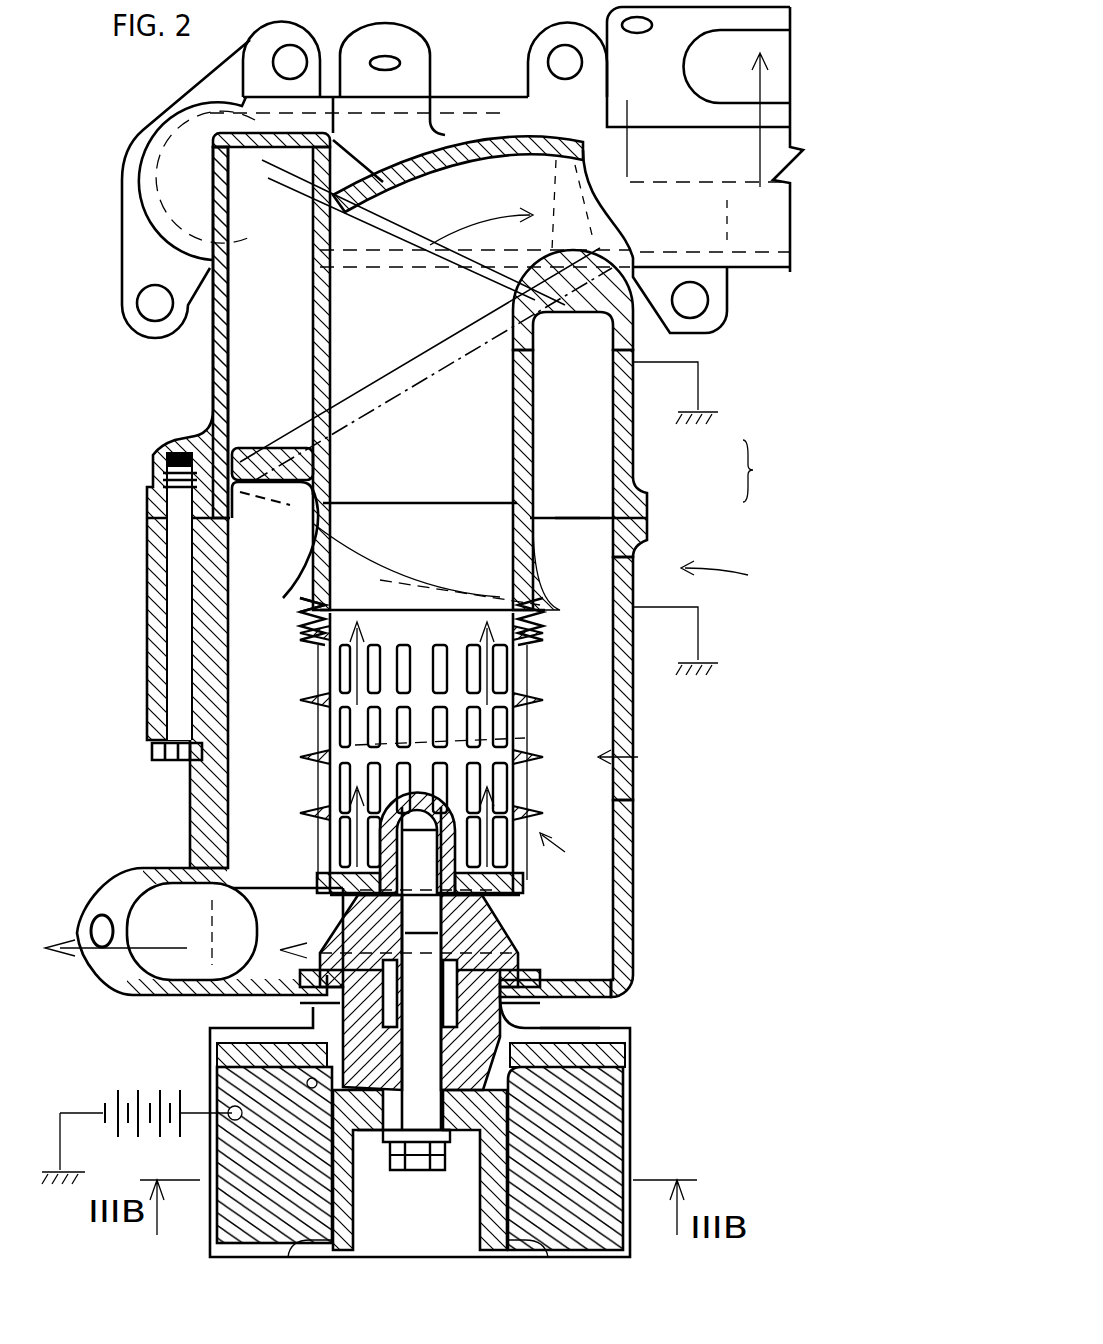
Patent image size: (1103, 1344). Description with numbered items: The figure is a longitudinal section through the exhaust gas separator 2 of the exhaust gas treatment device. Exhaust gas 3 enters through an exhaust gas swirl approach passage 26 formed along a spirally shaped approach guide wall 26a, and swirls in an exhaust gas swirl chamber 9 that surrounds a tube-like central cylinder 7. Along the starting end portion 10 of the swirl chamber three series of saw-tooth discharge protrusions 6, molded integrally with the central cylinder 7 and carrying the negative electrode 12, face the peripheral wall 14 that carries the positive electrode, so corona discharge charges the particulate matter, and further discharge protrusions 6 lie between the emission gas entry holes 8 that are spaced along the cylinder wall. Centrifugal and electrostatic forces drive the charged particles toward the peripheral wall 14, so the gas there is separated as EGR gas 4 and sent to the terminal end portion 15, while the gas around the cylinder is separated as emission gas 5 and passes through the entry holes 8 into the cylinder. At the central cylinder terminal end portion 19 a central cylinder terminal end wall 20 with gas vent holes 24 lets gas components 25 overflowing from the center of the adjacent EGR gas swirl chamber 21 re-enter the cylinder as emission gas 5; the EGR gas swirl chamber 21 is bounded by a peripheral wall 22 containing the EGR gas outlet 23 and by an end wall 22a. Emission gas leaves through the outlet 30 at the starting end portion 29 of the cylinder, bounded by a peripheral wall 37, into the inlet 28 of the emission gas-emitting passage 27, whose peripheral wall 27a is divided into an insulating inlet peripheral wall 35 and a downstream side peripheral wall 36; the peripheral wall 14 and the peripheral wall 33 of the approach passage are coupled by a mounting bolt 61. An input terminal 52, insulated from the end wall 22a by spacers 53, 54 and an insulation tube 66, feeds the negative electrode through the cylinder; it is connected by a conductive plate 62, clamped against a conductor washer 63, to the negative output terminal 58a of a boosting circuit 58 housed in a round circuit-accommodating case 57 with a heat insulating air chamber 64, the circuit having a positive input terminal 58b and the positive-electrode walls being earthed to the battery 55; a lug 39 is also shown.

The exhaust gas separator 2 is at (725, 580).
The exhaust gas 3 is at (293, 530).
The EGR gas 4 is at (222, 820).
The emission gas 5 is at (765, 88).
The discharge protrusions 6 is at (298, 620).
The central cylinder 7 is at (574, 854).
The emission gas entry holes 8 is at (330, 672).
The exhaust gas swirl chamber 9 is at (629, 757).
The starting end portion 10 is at (588, 563).
The electrode 12 is at (312, 605).
The peripheral wall 14 is at (630, 700).
The terminal end portion 15 is at (595, 887).
The central cylinder terminal end portion 19 is at (318, 873).
The central cylinder terminal end wall 20 is at (225, 895).
The EGR gas swirl chamber 21 is at (622, 965).
The peripheral wall 22 is at (625, 917).
The end wall 22a is at (575, 1028).
The EGR gas outlet 23 is at (147, 985).
The gas vent holes 24 is at (315, 825).
The gas components 25 is at (330, 912).
The exhaust gas swirl approach passage 26 is at (223, 347).
The approach guide wall 26a is at (228, 415).
The emission gas-emitting passage 27 is at (355, 350).
The peripheral wall 27a is at (774, 471).
The inlet 28 is at (467, 517).
The starting end portion 29 is at (378, 608).
The outlet 30 is at (425, 608).
The peripheral wall 33 is at (647, 503).
The peripheral wall 35 is at (553, 517).
The downstream side peripheral wall 36 is at (527, 443).
The peripheral wall 37 is at (465, 608).
The mounting lug 39 is at (758, 268).
The input terminal 52 is at (418, 1165).
The spacer 53 is at (480, 893).
The spacer 54 is at (522, 985).
The battery 55 is at (137, 1111).
The circuit-accommodating case 57 is at (630, 1100).
The boosting circuit 58 is at (228, 1190).
The negative output terminal 58a is at (320, 1085).
The positive input terminal 58b is at (228, 1090).
The mounting bolt 61 is at (178, 615).
The conductive plate 62 is at (375, 1132).
The conductor washer 63 is at (463, 1115).
The heat insulating air chamber 64 is at (578, 1040).
The insulation tube 66 is at (421, 968).